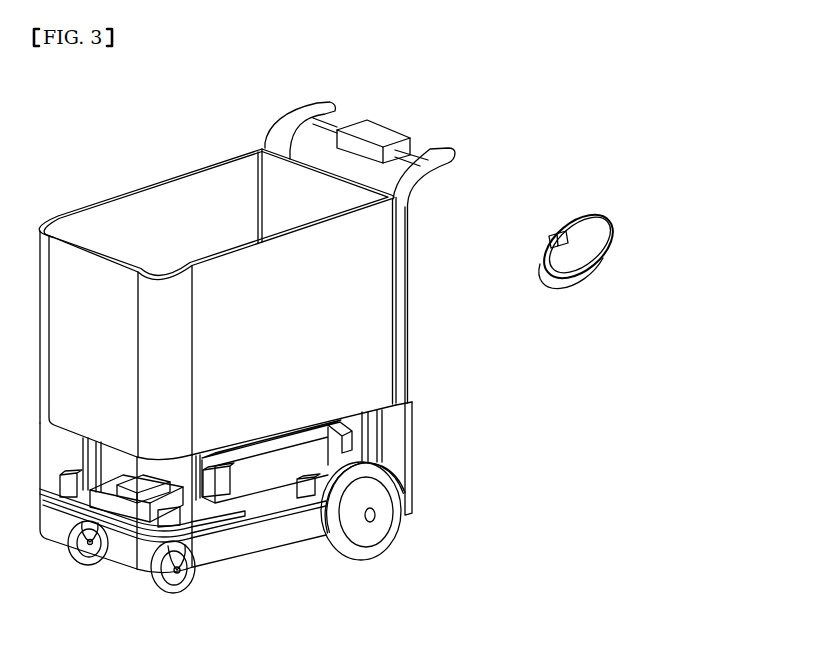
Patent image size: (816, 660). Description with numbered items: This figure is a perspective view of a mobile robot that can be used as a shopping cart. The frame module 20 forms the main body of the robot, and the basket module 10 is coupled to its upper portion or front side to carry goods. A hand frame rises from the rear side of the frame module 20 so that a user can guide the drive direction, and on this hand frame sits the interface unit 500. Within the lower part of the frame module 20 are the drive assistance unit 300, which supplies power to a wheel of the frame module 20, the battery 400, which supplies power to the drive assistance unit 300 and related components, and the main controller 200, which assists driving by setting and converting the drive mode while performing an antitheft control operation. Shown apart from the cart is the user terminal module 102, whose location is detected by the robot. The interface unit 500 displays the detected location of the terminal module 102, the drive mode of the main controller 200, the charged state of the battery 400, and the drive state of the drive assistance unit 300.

The basket module 10 is at (186, 169).
The frame module 20 is at (410, 430).
The interface unit 500 is at (378, 132).
The user terminal module 102 is at (604, 238).
The drive assistance unit 300 is at (395, 522).
The main controller 200 is at (152, 497).
The battery 400 is at (265, 485).